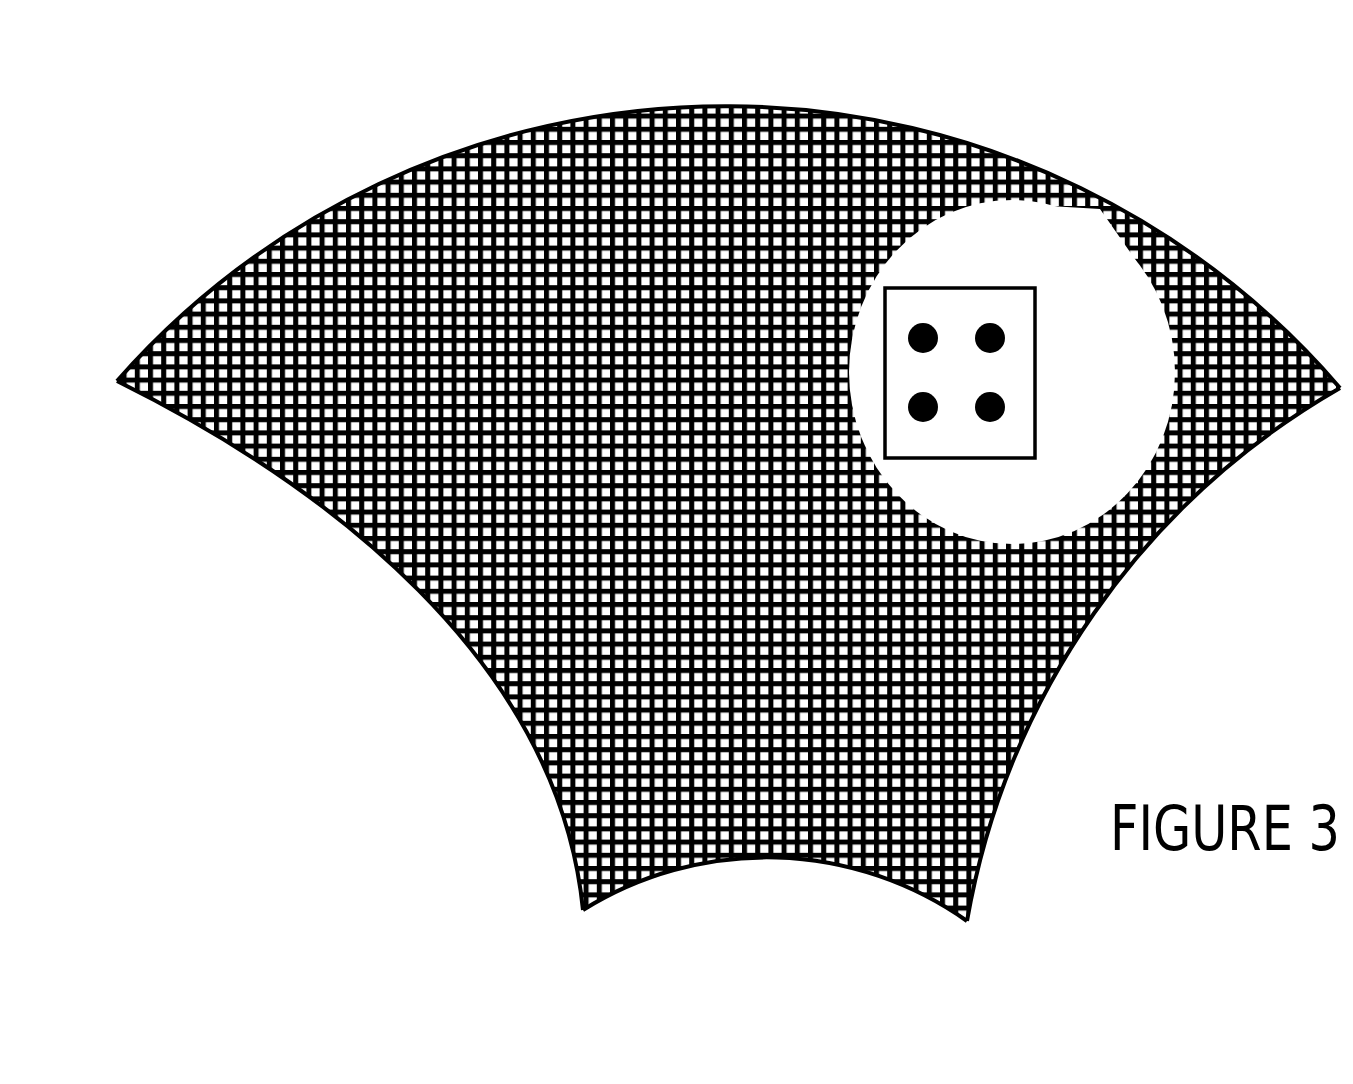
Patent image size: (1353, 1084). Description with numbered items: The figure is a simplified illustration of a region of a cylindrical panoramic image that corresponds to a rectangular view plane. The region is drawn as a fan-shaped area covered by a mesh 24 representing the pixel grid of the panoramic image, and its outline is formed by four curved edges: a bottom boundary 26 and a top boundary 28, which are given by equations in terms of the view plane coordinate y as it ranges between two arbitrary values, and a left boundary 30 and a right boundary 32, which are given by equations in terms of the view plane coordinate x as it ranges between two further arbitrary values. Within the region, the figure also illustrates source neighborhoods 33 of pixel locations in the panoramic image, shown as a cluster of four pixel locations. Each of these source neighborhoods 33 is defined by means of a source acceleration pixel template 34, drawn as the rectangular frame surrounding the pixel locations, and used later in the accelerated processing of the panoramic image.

The mesh panel section 24 is at (630, 237).
The bottom boundary 26 is at (847, 873).
The top boundary 28 is at (1103, 207).
The left boundary 30 is at (373, 547).
The right boundary 32 is at (1150, 547).
The source neighborhoods 33 is at (1012, 372).
The source acceleration pixel template 34 is at (948, 289).